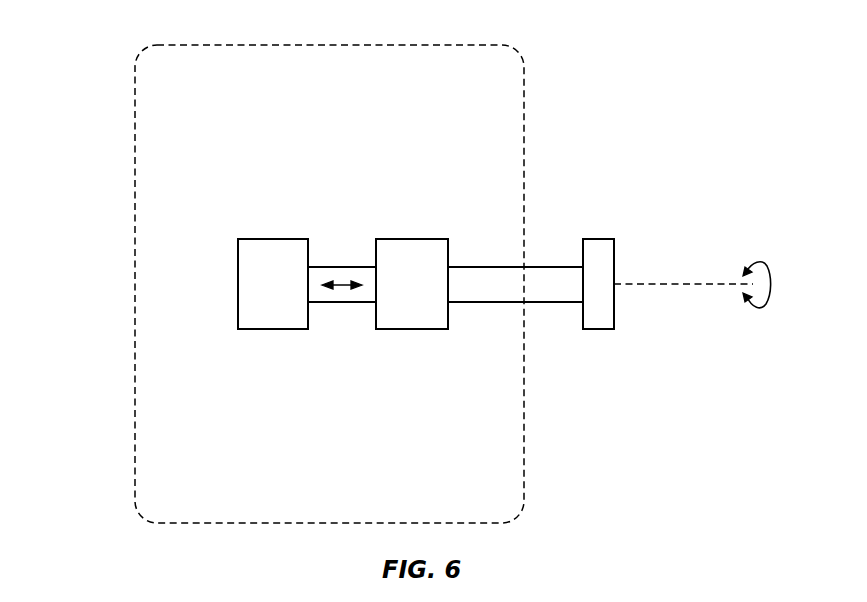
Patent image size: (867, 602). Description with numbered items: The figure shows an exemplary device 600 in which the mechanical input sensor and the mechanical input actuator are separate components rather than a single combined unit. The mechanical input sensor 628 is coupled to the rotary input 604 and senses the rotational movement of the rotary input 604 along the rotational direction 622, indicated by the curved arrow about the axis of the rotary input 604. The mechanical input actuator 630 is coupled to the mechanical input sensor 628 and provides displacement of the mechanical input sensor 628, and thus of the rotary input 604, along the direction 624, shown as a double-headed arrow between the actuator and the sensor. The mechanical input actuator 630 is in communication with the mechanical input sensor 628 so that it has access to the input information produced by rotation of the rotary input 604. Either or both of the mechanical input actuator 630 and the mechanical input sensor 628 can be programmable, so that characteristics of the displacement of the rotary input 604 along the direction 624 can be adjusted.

The device 600 is at (118, 5).
The mechanical input actuator 630 is at (276, 238).
The mechanical input sensor 628 is at (413, 238).
The direction 624 is at (343, 282).
The rotary input 604 is at (600, 238).
The rotational direction 622 is at (758, 260).